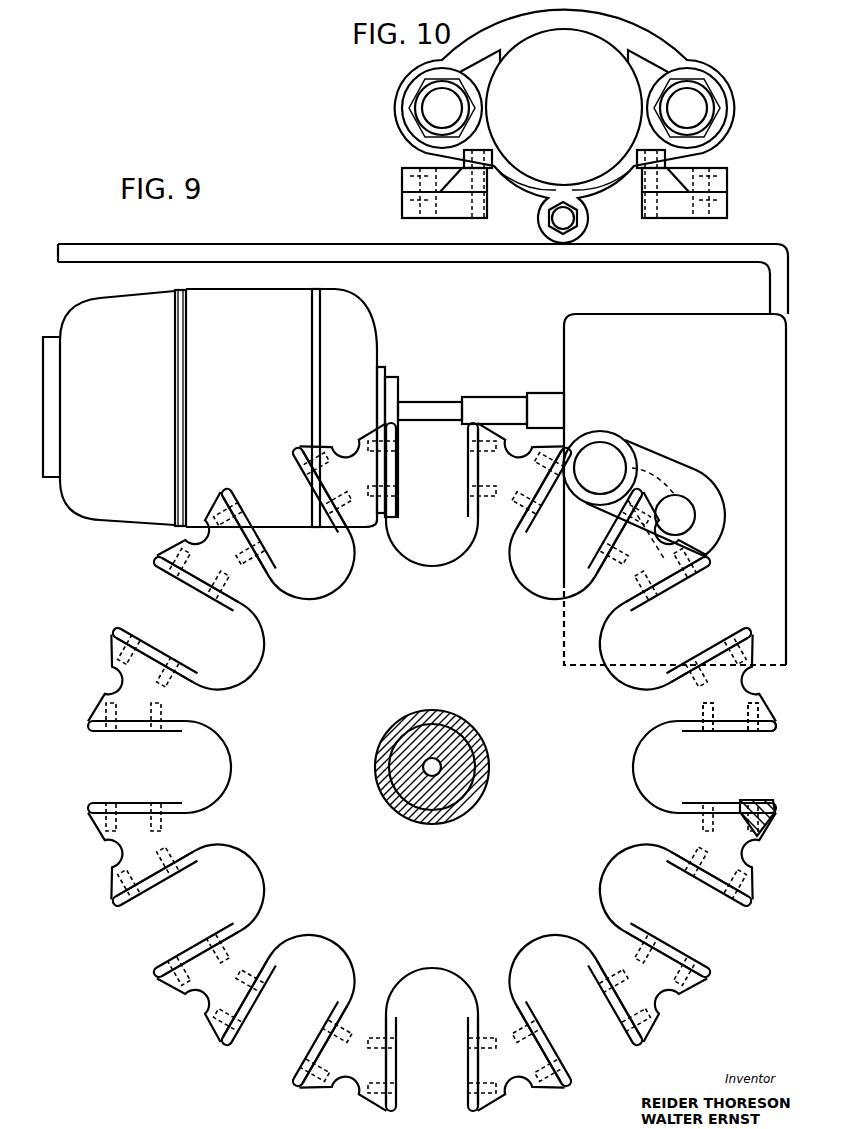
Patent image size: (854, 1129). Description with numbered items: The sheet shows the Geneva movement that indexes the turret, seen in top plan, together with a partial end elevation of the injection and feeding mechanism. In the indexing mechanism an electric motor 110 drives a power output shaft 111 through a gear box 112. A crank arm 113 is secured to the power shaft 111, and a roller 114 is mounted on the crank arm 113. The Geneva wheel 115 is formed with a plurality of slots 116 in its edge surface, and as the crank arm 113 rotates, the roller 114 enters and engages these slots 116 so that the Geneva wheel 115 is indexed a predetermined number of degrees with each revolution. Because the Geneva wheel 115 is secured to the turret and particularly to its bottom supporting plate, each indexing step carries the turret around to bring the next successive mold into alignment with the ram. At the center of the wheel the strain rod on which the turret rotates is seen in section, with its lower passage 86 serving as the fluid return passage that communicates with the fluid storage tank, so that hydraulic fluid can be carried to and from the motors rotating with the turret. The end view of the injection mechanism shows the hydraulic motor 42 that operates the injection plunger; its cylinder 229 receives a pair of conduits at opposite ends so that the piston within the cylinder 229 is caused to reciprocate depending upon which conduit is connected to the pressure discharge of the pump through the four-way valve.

In FIG. 10, the hydraulic motor 42 is at (566, 133).
In FIG. 10, the cylinder 229 is at (564, 107).
In FIG. 9, the electric motor 110 is at (280, 315).
In FIG. 9, the gear box 112 is at (688, 326).
In FIG. 9, the roller 114 is at (619, 440).
In FIG. 9, the crank arm 113 is at (665, 458).
In FIG. 9, the power output shaft 111 is at (688, 514).
In FIG. 9, the slots 116 is at (737, 726).
In FIG. 9, the Geneva wheel 115 is at (573, 767).
In FIG. 9, the lower passage 86 is at (430, 762).